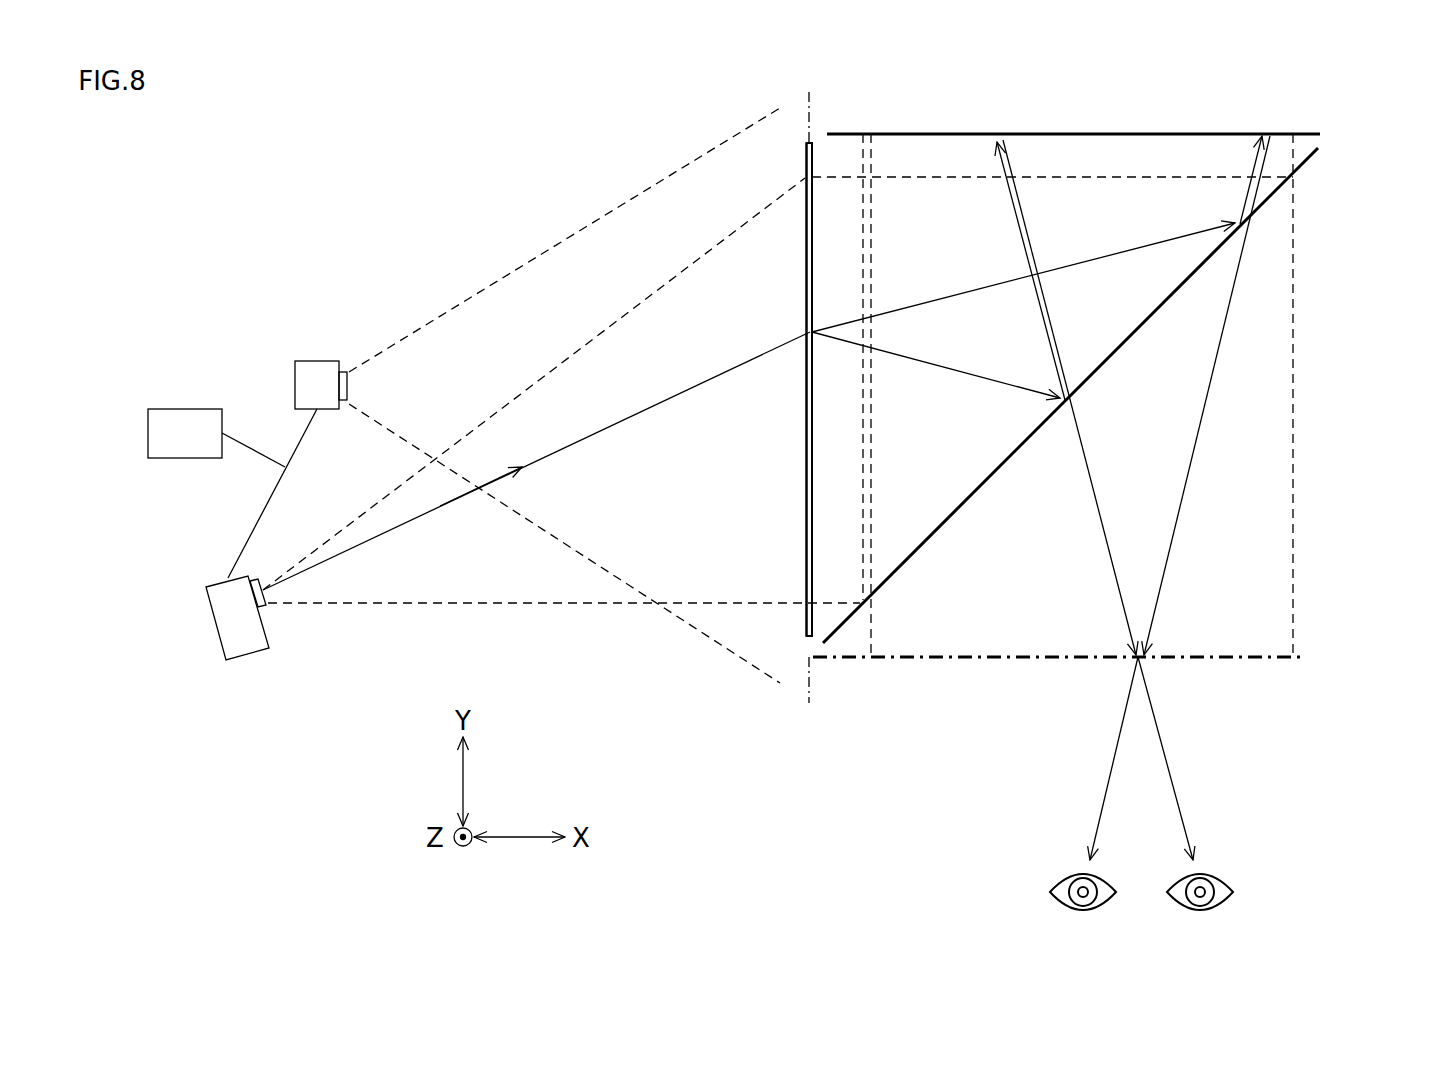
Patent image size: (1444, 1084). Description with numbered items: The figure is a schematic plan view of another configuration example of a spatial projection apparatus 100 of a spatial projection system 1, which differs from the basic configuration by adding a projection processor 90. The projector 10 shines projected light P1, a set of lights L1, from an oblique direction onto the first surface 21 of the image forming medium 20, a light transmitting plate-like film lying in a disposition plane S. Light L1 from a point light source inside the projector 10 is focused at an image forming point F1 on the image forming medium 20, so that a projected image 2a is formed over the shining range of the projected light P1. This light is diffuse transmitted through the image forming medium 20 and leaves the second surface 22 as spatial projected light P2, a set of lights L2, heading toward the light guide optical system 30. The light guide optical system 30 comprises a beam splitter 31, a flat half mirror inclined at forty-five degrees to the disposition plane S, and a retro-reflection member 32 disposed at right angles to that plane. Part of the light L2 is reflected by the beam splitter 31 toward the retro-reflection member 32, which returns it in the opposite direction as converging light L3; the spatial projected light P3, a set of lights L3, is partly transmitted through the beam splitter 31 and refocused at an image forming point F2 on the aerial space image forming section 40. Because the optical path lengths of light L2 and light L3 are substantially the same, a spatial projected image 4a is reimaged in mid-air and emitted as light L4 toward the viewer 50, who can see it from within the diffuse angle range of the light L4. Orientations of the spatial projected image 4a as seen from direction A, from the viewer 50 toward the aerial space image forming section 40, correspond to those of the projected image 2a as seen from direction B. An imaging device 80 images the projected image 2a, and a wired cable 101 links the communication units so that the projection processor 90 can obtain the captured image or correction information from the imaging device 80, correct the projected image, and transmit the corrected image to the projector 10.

The spatial projection system 1 is at (345, 190).
The spatial projection apparatus 100 is at (343, 240).
The projector 10 is at (247, 657).
The imaging device 80 is at (293, 382).
The projection processor 90 is at (172, 409).
The wired cable 101 is at (270, 495).
The projected image 2a is at (805, 178).
The disposition plane S is at (809, 383).
The image forming medium 20 is at (806, 503).
The first surface 21 is at (806, 455).
The second surface 22 is at (813, 433).
The image forming point F1 is at (804, 331).
The light L1 is at (648, 405).
The light L2 is at (1098, 258).
The light L3 is at (1205, 398).
The light L4 is at (1170, 765).
The direction B is at (824, 398).
The direction A is at (1004, 677).
The light guide optical system 30 is at (1335, 222).
The beam splitter 31 is at (1308, 157).
The retro-reflection member 32 is at (1243, 134).
The aerial space image forming section 40 is at (1300, 657).
The spatial projected image 4a is at (1295, 663).
The image forming point F2 is at (1138, 657).
The projected light P1 is at (550, 605).
The spatial projected light P2 is at (838, 610).
The spatial projected light P3 is at (872, 637).
The viewer 50 is at (1022, 901).